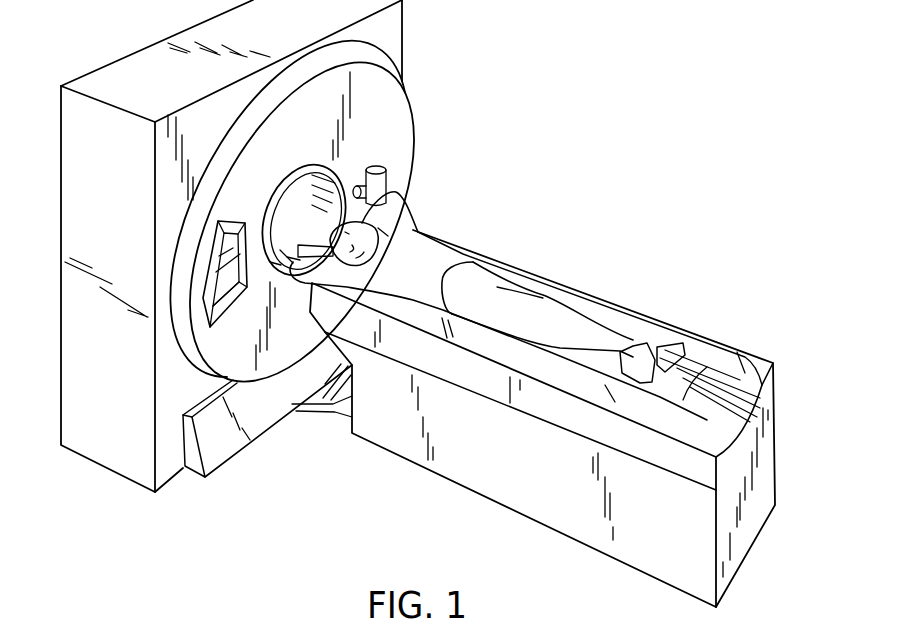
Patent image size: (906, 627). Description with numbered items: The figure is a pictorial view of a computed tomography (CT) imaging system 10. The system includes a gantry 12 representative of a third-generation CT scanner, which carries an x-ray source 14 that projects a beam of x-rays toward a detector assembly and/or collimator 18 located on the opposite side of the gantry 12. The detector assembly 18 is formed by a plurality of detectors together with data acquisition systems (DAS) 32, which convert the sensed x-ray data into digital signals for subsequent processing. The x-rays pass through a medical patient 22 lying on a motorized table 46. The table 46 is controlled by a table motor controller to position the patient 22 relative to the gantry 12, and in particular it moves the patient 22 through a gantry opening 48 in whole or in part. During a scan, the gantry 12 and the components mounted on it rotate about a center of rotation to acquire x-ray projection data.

The computed tomography (CT) imaging system 10 is at (548, 100).
The gantry 12 is at (407, 143).
The x-ray source 14 is at (385, 183).
The detector assembly and/or collimator 18 is at (227, 298).
The medical patient 22 is at (428, 248).
The data acquisition systems (DAS) 32 is at (240, 221).
The motorized table 46 is at (513, 489).
The gantry opening 48 is at (288, 200).